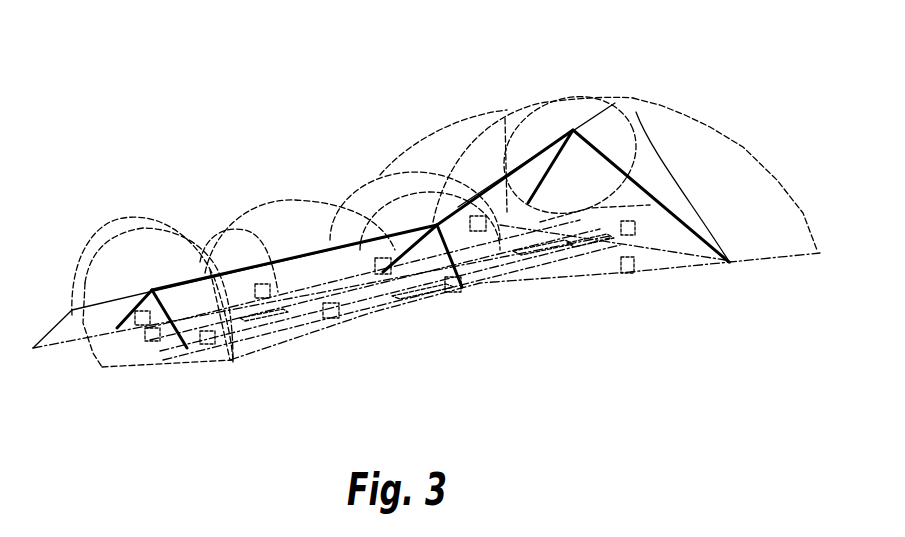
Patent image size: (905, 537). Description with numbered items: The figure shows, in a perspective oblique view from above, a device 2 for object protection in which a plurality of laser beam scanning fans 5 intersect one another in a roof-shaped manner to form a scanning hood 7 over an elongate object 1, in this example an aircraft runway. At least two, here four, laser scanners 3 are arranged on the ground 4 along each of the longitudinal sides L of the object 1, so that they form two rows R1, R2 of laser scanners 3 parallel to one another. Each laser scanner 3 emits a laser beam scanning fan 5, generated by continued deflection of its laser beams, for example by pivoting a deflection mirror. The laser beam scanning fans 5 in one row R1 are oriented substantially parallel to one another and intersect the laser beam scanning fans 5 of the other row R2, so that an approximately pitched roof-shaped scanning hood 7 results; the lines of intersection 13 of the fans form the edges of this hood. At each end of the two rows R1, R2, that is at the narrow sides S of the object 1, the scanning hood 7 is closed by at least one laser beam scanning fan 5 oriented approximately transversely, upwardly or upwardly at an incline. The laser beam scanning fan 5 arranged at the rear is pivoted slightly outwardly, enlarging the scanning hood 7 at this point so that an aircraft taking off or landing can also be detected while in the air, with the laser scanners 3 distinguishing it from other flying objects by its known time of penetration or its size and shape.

The object 1 is at (257, 320).
The device 2 is at (698, 78).
The laser scanners 3 is at (135, 318).
The ground 4 is at (601, 306).
The laser beam scanning fans 5 is at (247, 217).
The scanning hood 7 is at (587, 211).
The lines of intersection 13 is at (140, 308).
The longitudinal sides L is at (387, 283).
The narrow sides S is at (590, 238).
The first row R1 is at (118, 194).
The second row R2 is at (525, 357).